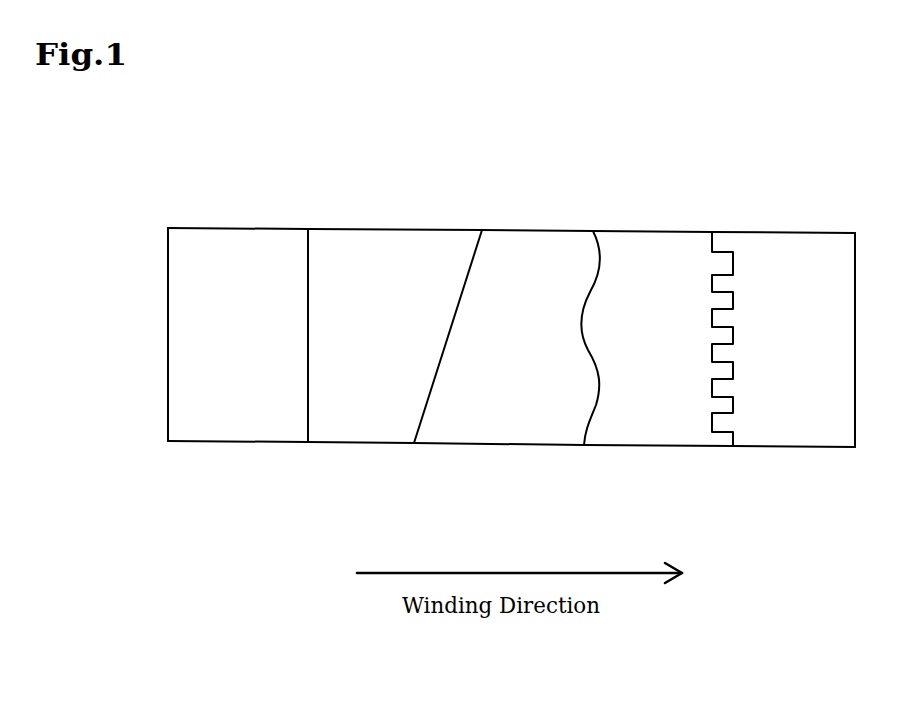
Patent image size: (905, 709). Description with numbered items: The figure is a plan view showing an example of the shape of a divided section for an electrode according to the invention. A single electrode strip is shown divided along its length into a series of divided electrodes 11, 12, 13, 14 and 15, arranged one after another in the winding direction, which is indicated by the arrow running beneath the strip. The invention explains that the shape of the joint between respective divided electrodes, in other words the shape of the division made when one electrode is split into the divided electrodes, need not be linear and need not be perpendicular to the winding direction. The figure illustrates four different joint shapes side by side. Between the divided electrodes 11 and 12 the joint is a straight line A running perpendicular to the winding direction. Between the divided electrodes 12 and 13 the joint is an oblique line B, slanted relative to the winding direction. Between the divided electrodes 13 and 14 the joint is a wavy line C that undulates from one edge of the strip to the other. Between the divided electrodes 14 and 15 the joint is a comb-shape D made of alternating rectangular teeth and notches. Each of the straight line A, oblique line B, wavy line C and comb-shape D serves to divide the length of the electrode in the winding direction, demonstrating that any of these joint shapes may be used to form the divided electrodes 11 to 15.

The divided electrode 11 is at (227, 424).
The divided electrode 12 is at (353, 424).
The divided electrode 13 is at (488, 428).
The divided electrode 14 is at (643, 429).
The divided electrode 15 is at (792, 431).
The straight line A is at (312, 267).
The oblique line B is at (474, 261).
The wavy line C is at (604, 265).
The comb-shape D is at (738, 263).